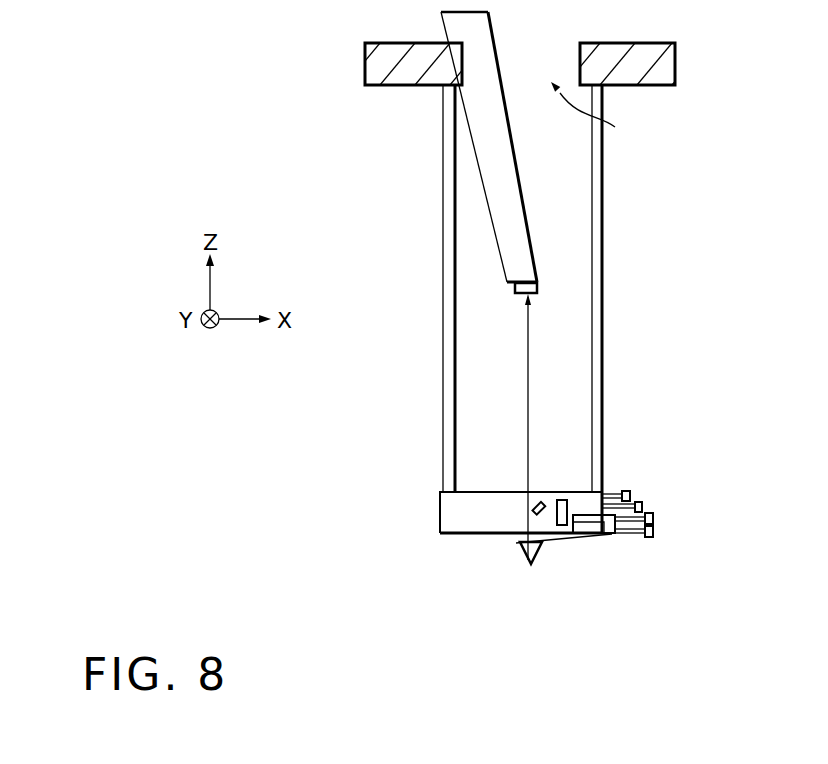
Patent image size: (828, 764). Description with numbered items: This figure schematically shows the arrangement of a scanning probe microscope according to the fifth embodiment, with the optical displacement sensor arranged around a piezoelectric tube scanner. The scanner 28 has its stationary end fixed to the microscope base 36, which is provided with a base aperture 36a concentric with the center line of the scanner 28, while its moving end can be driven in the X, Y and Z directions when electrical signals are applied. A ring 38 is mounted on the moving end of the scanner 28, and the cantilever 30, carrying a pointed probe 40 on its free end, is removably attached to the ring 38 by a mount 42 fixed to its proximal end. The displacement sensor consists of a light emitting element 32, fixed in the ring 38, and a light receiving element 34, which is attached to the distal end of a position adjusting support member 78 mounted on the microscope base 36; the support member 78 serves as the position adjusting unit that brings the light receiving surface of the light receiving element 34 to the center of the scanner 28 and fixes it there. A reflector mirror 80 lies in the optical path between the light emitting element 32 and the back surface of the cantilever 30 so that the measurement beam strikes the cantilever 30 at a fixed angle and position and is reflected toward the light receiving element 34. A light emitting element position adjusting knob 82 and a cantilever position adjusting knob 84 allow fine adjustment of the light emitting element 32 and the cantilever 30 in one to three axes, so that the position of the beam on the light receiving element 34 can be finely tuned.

The scanner 28 is at (603, 321).
The cantilever 30 is at (550, 549).
The light emitting element 32 is at (568, 506).
The light receiving element 34 is at (538, 291).
The microscope base 36 is at (365, 64).
The base aperture 36a is at (606, 114).
The ring 38 is at (440, 510).
The probe 40 is at (524, 555).
The mount 42 is at (595, 527).
The position adjusting support member 78 is at (474, 146).
The reflector mirror 80 is at (541, 498).
The light emitting element position adjusting knob 82 is at (640, 486).
The cantilever position adjusting knob 84 is at (662, 513).